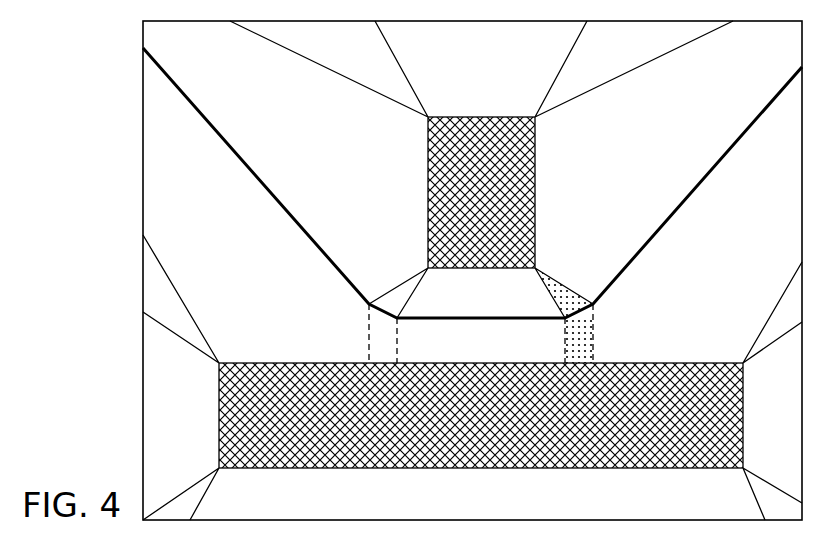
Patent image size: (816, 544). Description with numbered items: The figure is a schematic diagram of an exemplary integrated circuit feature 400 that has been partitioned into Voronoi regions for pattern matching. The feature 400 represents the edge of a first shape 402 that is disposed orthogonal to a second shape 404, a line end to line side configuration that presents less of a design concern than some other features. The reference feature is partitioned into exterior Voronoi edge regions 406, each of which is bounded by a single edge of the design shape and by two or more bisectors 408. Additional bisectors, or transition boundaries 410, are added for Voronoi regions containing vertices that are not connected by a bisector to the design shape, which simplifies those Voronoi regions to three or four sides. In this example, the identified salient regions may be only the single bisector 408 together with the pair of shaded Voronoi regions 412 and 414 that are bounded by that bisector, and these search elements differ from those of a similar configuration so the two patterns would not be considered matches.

The integrated circuit feature 400 is at (118, 92).
The first shape 402 is at (683, 363).
The second shape 404 is at (485, 128).
The exterior Voronoi edge regions 406 is at (228, 253).
The bisectors 408 is at (253, 175).
The transition boundaries 410 is at (369, 342).
The shaded Voronoi region 412 is at (565, 338).
The shaded Voronoi region 414 is at (558, 293).